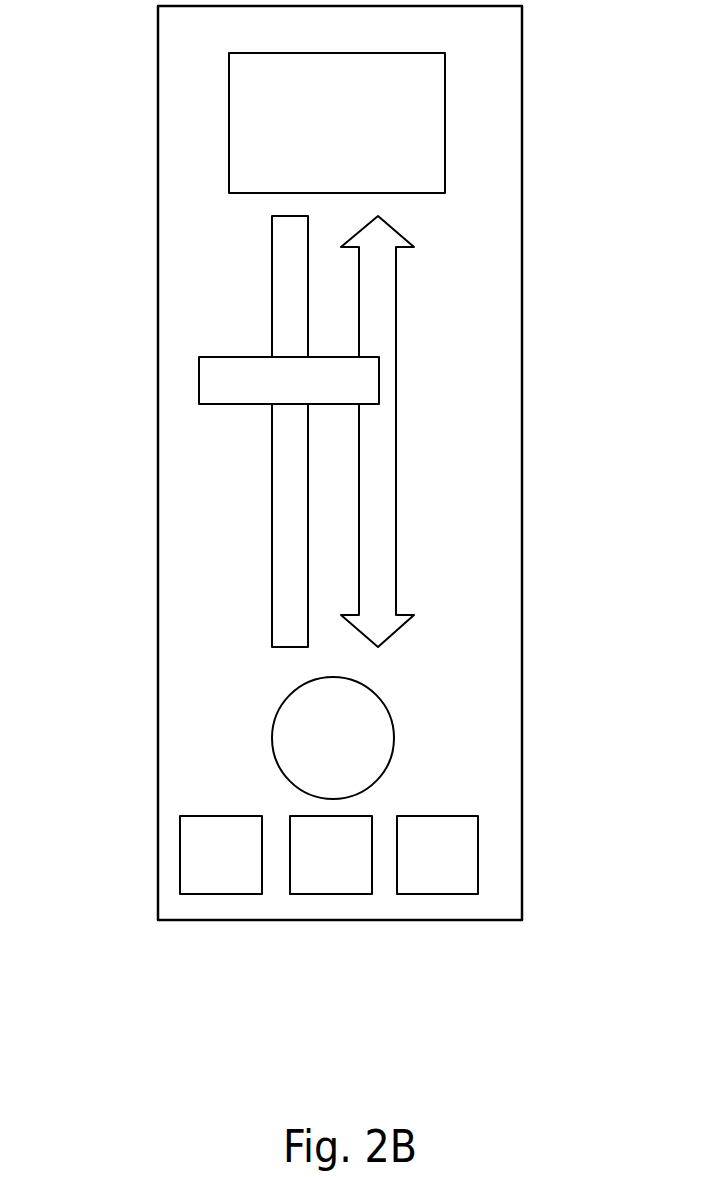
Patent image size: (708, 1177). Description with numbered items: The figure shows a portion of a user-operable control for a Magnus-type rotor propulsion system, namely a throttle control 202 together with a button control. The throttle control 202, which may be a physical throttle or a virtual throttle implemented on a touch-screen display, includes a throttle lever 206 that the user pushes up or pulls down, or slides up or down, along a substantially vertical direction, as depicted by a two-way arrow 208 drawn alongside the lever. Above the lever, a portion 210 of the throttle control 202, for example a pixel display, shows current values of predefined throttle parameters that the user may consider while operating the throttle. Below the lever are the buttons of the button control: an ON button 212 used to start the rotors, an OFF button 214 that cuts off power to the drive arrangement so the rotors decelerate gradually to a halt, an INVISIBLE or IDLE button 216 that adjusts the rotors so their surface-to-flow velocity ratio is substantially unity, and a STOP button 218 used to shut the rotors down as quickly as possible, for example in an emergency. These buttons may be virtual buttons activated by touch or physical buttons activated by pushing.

The throttle control 202 is at (284, 250).
The throttle lever 206 is at (210, 395).
The two-way arrow 208 is at (396, 308).
The portion 210 is at (337, 123).
The ON button 212 is at (207, 828).
The OFF button 214 is at (357, 818).
The INVISIBLE or IDLE button 216 is at (457, 827).
The STOP button 218 is at (387, 707).